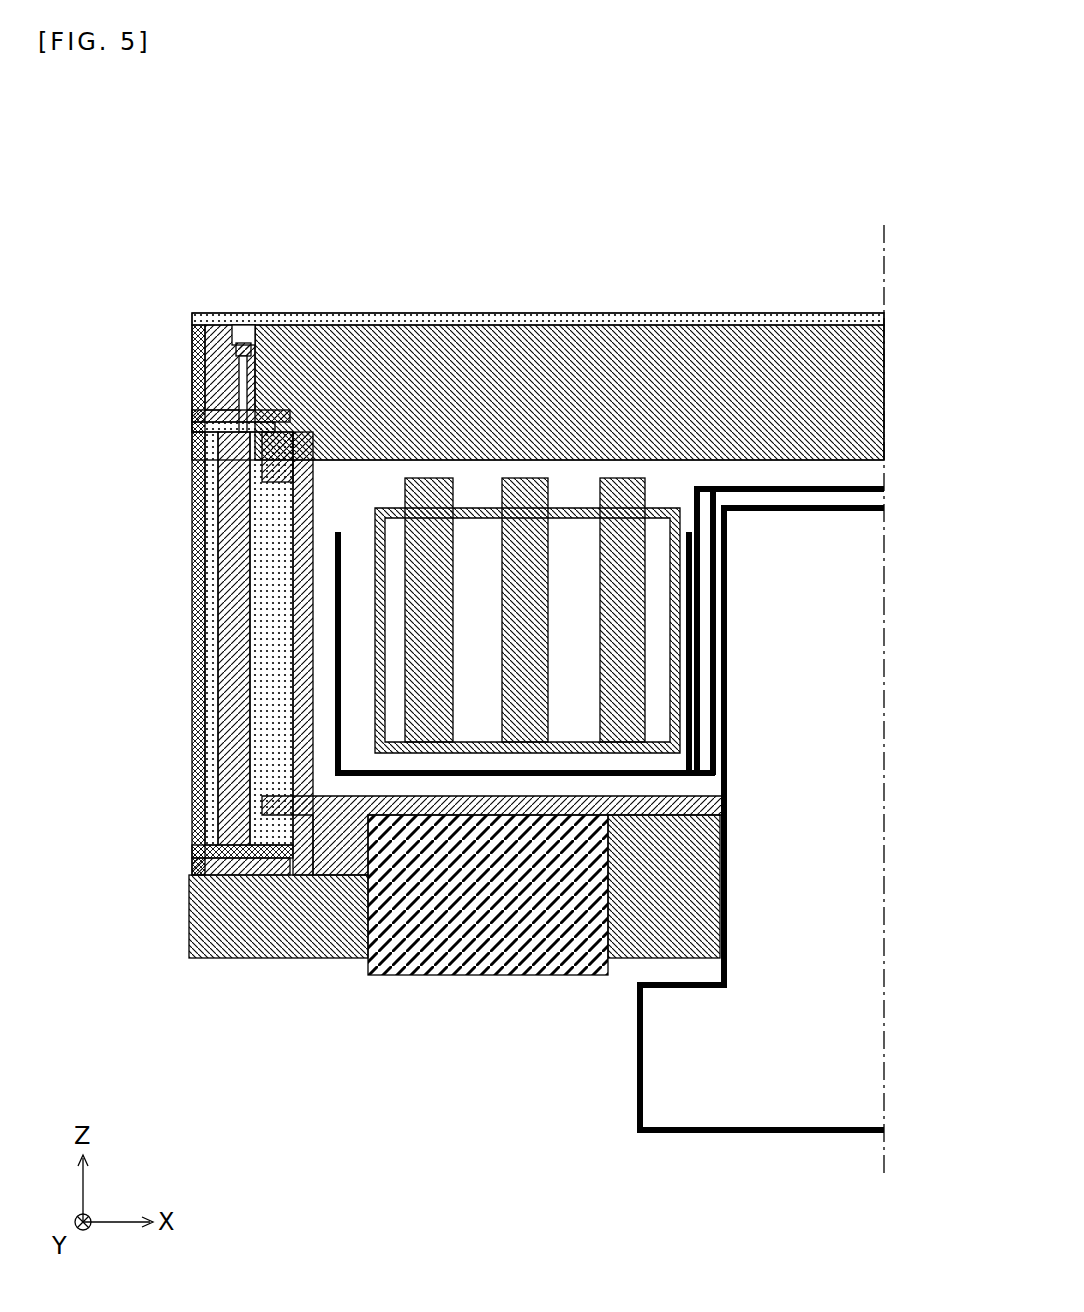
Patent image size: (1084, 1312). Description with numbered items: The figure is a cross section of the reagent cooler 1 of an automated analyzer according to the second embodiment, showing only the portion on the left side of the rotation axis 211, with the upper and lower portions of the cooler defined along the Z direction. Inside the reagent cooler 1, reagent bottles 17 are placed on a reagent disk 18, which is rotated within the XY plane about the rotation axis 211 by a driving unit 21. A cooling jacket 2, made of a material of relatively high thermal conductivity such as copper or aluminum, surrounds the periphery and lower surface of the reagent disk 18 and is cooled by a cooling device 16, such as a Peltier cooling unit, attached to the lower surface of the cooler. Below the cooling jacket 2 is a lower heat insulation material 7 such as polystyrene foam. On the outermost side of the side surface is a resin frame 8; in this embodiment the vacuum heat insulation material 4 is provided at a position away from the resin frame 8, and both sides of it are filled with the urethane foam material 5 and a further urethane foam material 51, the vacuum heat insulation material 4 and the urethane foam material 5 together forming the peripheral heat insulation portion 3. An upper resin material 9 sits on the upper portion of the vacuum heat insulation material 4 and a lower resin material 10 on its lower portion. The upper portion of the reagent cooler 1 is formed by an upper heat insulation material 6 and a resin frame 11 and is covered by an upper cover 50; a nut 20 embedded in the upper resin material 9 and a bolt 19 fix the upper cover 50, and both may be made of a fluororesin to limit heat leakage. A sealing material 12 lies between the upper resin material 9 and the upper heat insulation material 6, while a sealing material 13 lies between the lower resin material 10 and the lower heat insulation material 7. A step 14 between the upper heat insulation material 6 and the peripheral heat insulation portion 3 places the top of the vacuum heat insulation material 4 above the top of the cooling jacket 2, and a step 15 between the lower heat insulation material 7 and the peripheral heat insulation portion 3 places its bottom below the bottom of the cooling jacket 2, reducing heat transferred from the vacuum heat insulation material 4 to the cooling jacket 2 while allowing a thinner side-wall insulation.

The reagent cooler 1 is at (110, 155).
The cooling jacket 2 is at (355, 815).
The peripheral heat insulation portion 3 is at (178, 638).
The vacuum heat insulation material 4 is at (215, 598).
The heat insulation material 5 is at (262, 660).
The upper heat insulation material 6 is at (372, 358).
The lower heat insulation material 7 is at (254, 958).
The resin frame 8 is at (192, 752).
The upper resin material 9 is at (190, 458).
The lower resin material 10 is at (190, 838).
The resin frame 11 is at (288, 313).
The sealing material 12 is at (192, 388).
The sealing material 13 is at (192, 885).
The step 14 is at (181, 424).
The step 15 is at (182, 860).
The cooling device 16 is at (472, 975).
The reagent bottles 17 is at (430, 478).
The reagent disk 18 is at (350, 530).
The bolt 19 is at (241, 340).
The nut 20 is at (192, 413).
The driving unit 21 is at (718, 1132).
The upper cover 50 is at (507, 345).
The urethane foam material 51 is at (192, 708).
The rotation axis 211 is at (860, 713).